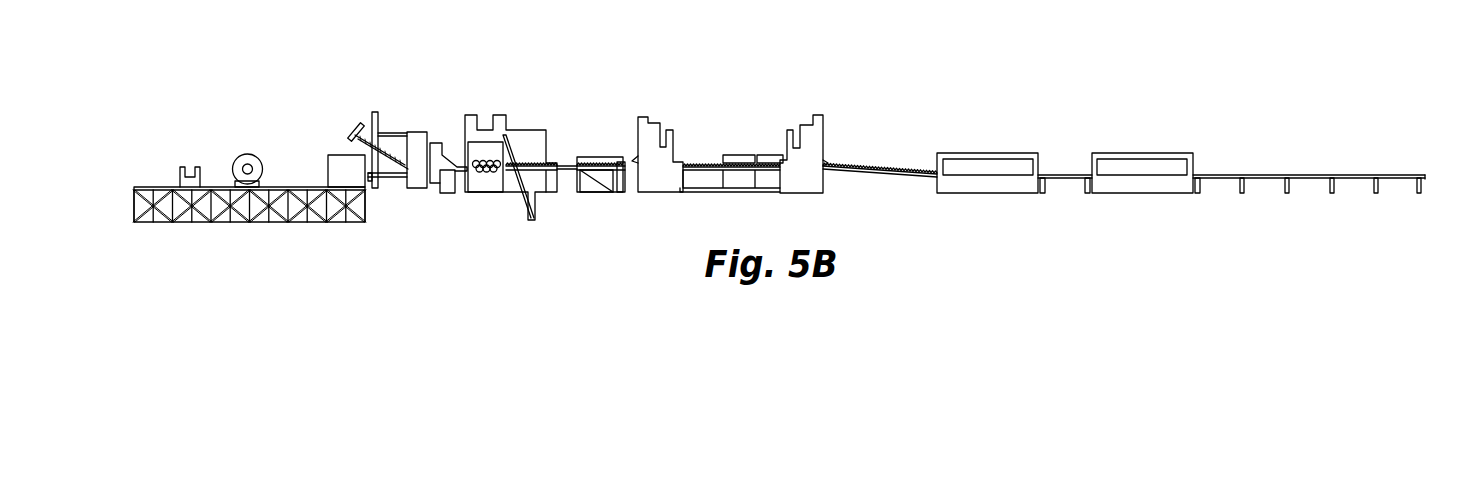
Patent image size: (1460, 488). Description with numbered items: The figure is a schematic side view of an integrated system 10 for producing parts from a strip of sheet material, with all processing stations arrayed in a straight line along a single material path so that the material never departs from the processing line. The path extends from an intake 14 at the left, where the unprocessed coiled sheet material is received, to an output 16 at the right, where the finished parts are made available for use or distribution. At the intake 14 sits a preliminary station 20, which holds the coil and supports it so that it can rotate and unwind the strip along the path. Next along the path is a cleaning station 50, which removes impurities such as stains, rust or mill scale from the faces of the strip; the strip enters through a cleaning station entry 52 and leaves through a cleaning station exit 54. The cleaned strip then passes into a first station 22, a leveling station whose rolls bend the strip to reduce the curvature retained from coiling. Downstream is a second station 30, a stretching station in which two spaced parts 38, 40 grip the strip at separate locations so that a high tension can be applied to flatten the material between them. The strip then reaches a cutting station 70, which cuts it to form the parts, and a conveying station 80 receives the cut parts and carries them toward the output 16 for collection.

The integrated system 10 is at (888, 100).
The intake 14 is at (142, 183).
The output 16 is at (1421, 165).
The preliminary station 20 is at (377, 107).
The first station 22 is at (530, 123).
The second station 30 is at (742, 133).
The part of stretcher apparatus 38 is at (655, 193).
The part of stretcher apparatus 40 is at (798, 194).
The cleaning station 50 is at (445, 133).
The cleaning station entry 52 is at (418, 189).
The cleaning station exit 54 is at (465, 179).
The cutting station 70 is at (985, 143).
The conveying station 80 is at (1313, 163).